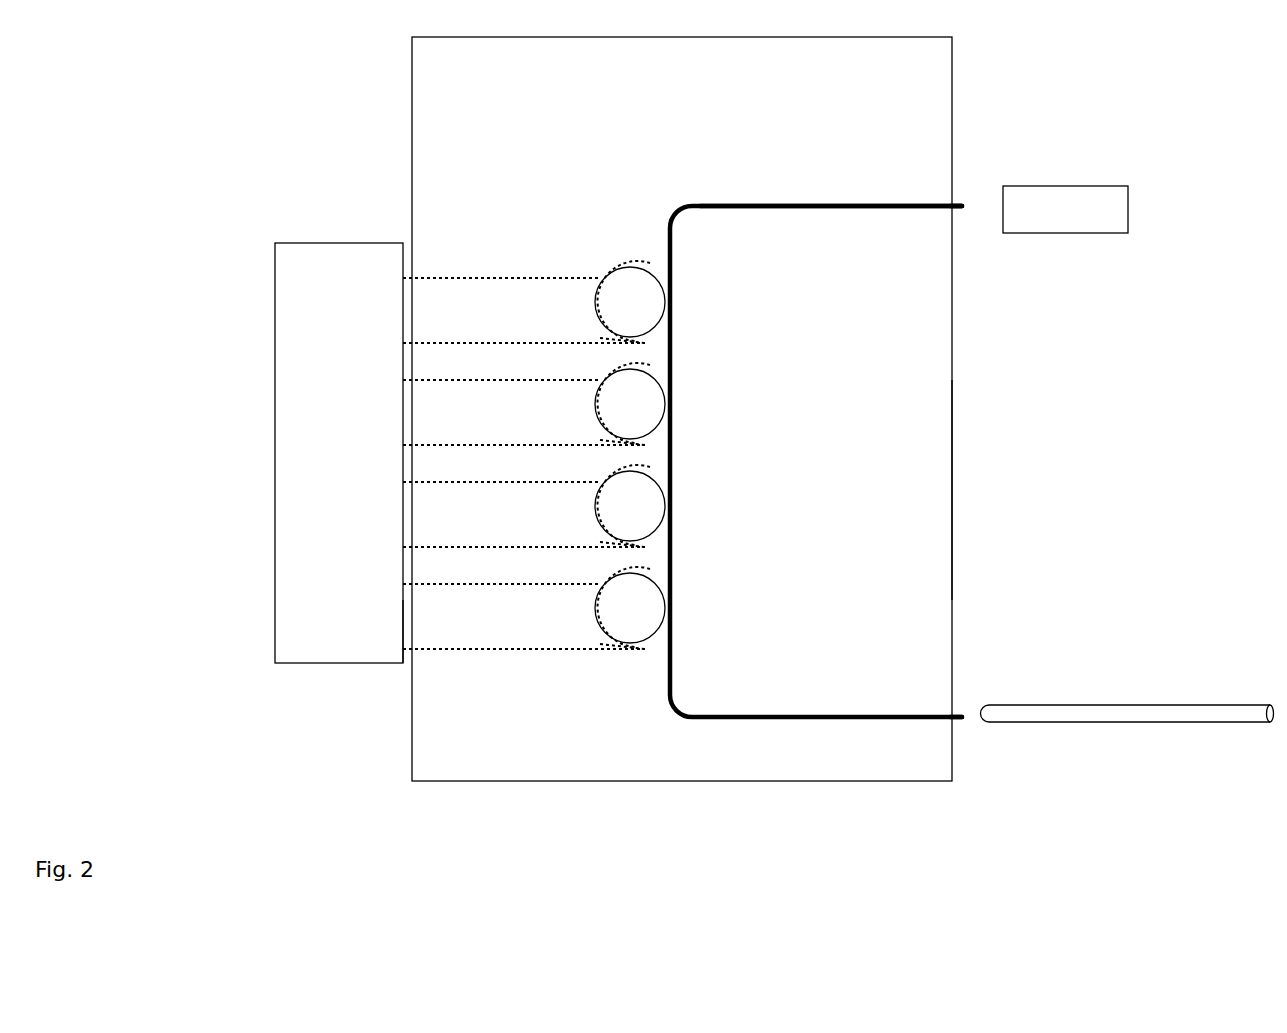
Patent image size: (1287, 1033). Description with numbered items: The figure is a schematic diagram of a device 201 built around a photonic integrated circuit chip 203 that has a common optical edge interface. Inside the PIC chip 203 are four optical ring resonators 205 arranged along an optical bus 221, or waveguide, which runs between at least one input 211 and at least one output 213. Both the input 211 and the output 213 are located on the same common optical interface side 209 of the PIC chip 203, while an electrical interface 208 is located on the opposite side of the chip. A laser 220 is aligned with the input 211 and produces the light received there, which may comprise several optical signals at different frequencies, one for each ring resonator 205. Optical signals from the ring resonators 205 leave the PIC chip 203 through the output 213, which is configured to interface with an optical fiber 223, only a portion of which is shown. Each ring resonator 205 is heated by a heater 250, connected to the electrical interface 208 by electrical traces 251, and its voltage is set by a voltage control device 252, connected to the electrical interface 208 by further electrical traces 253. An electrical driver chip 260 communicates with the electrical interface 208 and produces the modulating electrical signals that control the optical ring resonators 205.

The device 201 is at (661, 101).
The photonic integrated circuit chip 203 is at (630, 212).
The optical ring resonators 205 is at (612, 312).
The electrical interface 208 is at (403, 673).
The common optical interface side 209 is at (998, 481).
The input 211 is at (960, 218).
The output 213 is at (963, 703).
The laser 220 is at (1046, 220).
The optical bus 221 is at (836, 208).
The optical fiber 223 is at (1093, 724).
The heaters 250 is at (602, 333).
The electrical traces 251 is at (492, 341).
The voltage control devices 252 is at (601, 272).
The electrical traces 253 is at (487, 279).
The electrical driver chip 260 is at (320, 461).